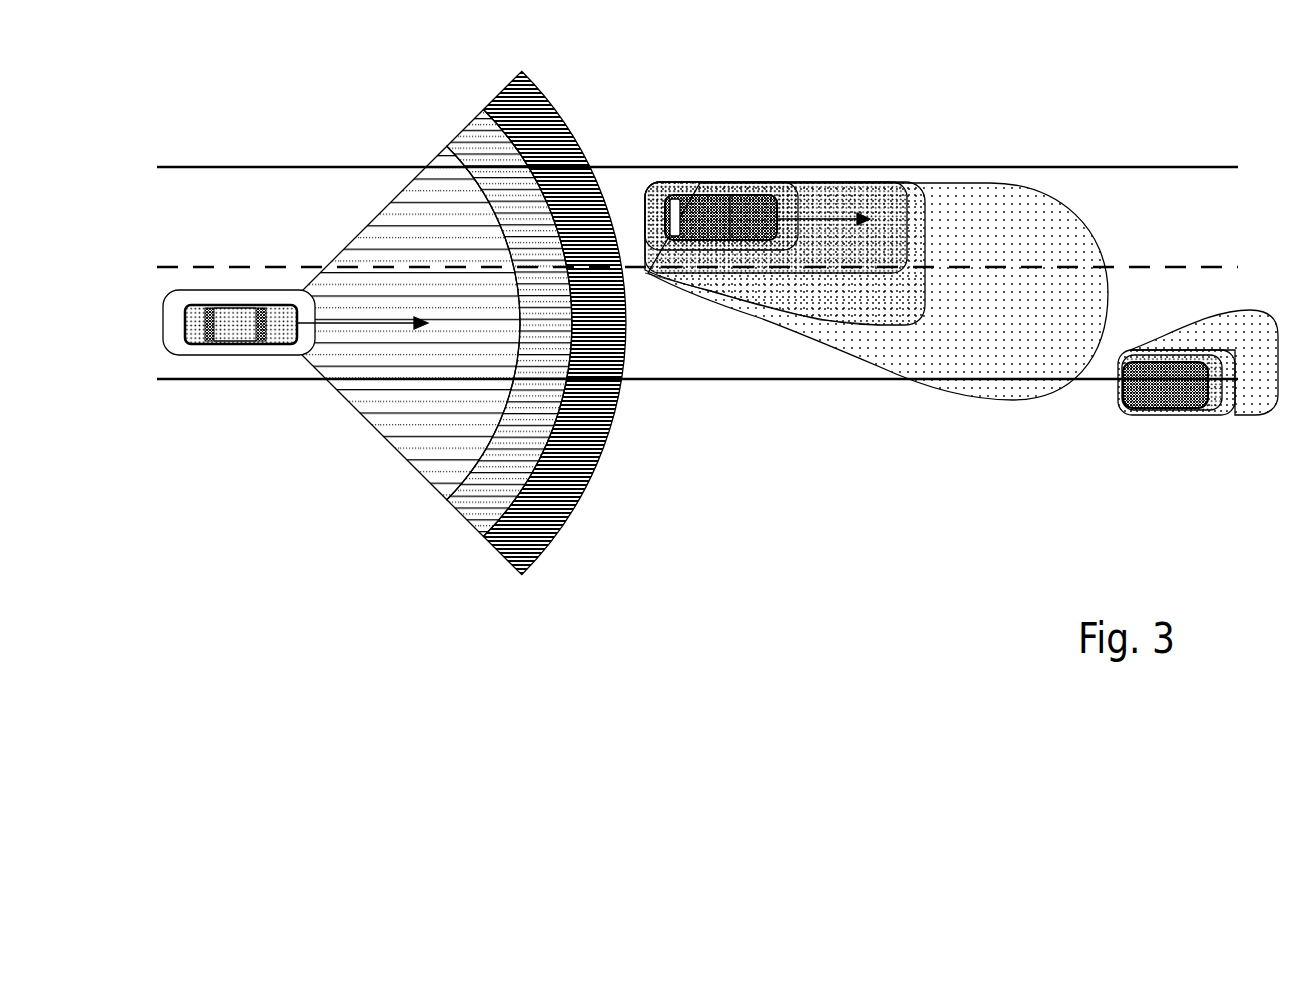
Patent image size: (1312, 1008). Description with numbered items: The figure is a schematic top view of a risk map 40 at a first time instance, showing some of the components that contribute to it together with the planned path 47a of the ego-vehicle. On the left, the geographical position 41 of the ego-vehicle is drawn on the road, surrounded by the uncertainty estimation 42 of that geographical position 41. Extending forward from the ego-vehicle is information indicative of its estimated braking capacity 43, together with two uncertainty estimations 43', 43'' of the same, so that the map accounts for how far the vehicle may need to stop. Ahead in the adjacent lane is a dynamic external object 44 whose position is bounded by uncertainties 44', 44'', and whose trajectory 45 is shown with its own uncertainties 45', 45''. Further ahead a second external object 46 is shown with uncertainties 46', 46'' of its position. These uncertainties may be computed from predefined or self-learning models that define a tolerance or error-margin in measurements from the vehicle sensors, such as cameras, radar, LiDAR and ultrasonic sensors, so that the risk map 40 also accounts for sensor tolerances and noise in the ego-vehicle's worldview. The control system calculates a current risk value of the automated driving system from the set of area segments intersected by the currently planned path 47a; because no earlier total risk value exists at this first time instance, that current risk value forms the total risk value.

The risk map 40 is at (318, 592).
The geographical position of the ego-vehicle 41 is at (248, 343).
The uncertainty estimation of the geographical position 42 is at (195, 357).
The estimated braking capacity of the vehicle 43 is at (395, 334).
The uncertainty estimation of the braking capacity 43' is at (501, 360).
The uncertainty estimation of the braking capacity 43'' is at (551, 359).
The planned path 47a is at (372, 323).
The external object 44 is at (721, 167).
The uncertainty of the position of the external object 44' is at (720, 167).
The uncertainty of the position of the external object 44'' is at (819, 214).
The trajectory of dynamic object 45 is at (776, 164).
The uncertainty of the trajectory 45' is at (762, 316).
The uncertainty of the trajectory 45'' is at (878, 324).
The external object 46 is at (1144, 430).
The uncertainty of the position of the external object 46' is at (1176, 423).
The uncertainty of the position of the external object 46'' is at (1204, 344).